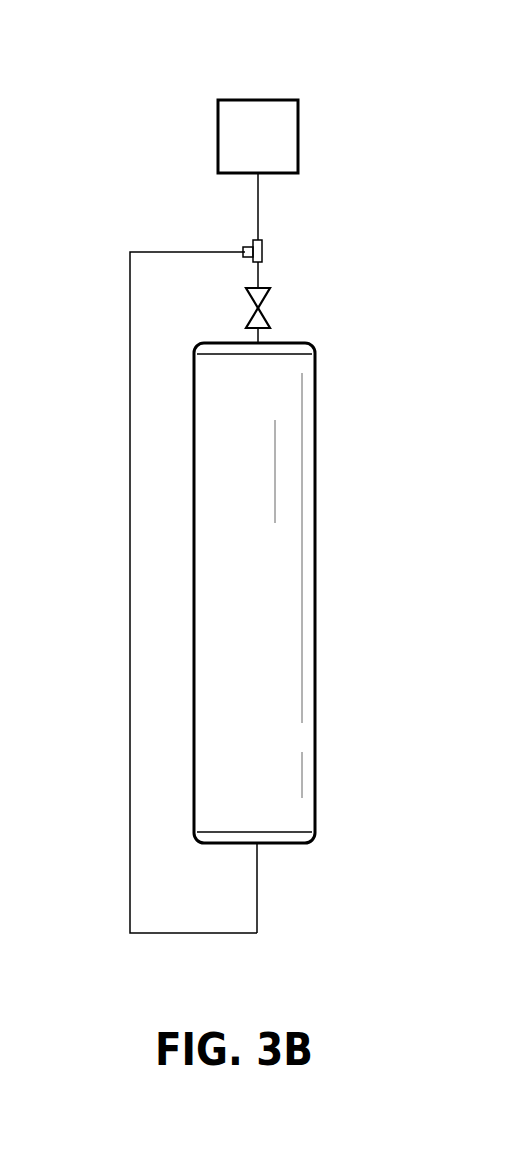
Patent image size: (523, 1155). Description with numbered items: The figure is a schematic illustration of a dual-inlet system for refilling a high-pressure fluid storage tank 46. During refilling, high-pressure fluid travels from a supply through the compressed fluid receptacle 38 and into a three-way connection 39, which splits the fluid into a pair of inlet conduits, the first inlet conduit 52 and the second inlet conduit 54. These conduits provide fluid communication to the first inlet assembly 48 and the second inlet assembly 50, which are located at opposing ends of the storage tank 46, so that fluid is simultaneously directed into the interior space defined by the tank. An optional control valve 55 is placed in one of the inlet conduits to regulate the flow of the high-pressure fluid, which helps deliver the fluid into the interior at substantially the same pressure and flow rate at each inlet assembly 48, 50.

The compressed fluid receptacle 38 is at (250, 118).
The three-way connection 39 is at (262, 250).
The high-pressure fluid storage tank 46 is at (272, 614).
The first inlet assembly 48 is at (262, 343).
The second inlet assembly 50 is at (259, 845).
The first inlet conduit 52 is at (253, 265).
The second inlet conduit 54 is at (129, 445).
The control valve 55 is at (268, 308).